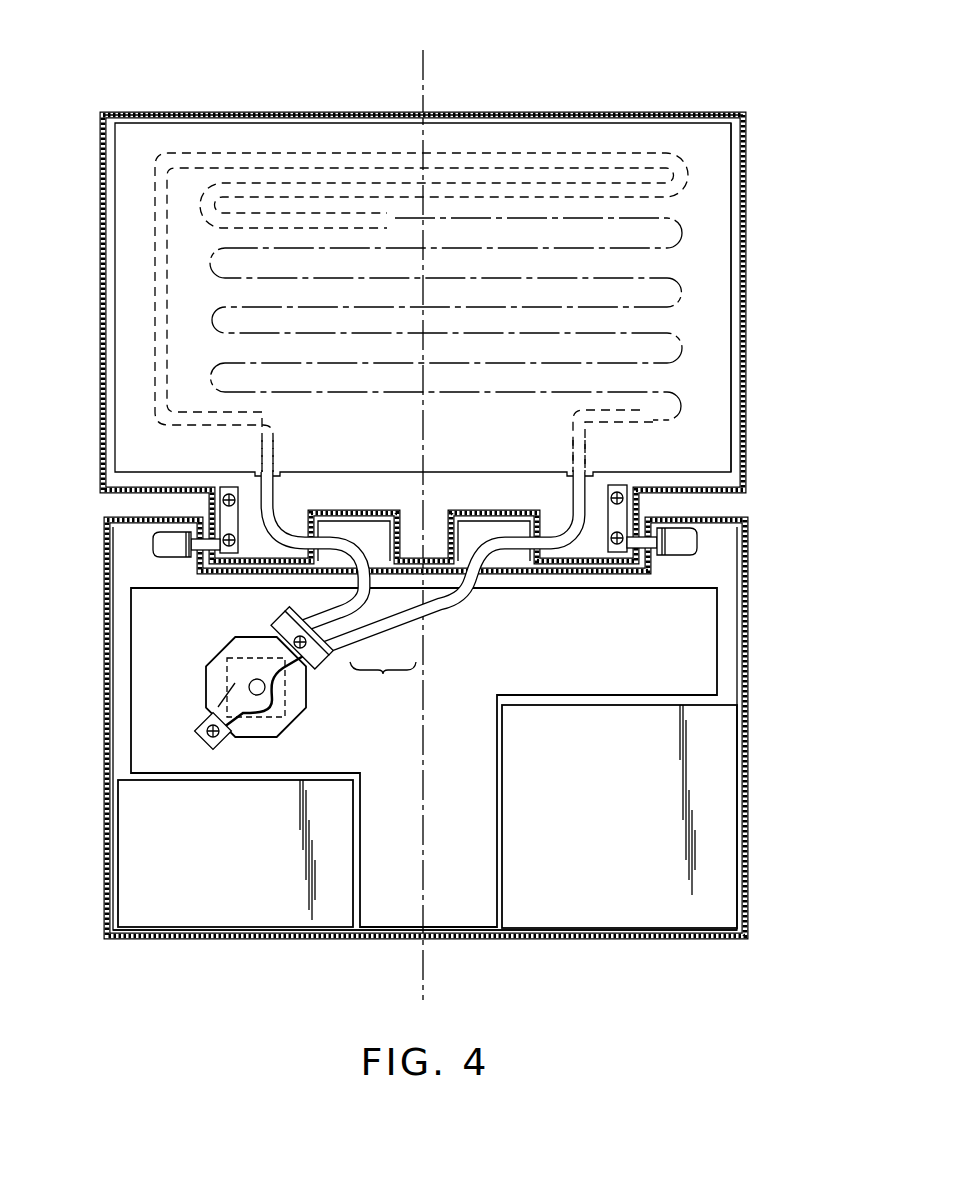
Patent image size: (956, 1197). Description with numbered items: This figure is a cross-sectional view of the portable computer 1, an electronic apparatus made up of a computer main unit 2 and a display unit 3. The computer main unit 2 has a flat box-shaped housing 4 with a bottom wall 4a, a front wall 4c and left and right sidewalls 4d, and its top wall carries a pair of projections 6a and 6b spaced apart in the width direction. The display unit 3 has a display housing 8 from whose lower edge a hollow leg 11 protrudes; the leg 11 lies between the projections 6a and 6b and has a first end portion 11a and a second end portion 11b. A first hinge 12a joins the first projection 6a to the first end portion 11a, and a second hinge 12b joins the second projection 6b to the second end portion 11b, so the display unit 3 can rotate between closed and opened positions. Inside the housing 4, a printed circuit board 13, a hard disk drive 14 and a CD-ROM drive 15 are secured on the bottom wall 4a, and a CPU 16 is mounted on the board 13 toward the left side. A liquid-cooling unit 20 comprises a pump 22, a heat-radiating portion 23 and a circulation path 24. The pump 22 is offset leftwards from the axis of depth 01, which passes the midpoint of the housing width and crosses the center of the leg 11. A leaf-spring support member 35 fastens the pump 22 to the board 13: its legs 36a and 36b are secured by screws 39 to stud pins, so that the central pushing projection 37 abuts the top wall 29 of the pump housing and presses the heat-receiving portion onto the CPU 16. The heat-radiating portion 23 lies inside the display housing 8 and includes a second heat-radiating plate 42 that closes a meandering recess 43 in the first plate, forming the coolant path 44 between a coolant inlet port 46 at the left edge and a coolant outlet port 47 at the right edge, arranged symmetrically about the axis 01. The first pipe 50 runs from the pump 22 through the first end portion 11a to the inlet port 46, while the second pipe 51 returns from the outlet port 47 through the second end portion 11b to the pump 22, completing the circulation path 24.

The portable computer 1 is at (607, 75).
The computer main unit 2 is at (128, 942).
The display unit 3 is at (702, 108).
The housing 4 is at (697, 935).
The bottom wall 4a is at (115, 752).
The front wall 4c is at (280, 945).
The left and right sidewalls 4d is at (103, 668).
The first projection 6a is at (153, 535).
The second projection 6b is at (705, 490).
The display housing 8 is at (183, 110).
The leg 11 is at (437, 515).
The first end portion 11a is at (238, 575).
The second end portion 11b is at (598, 562).
The first hinge 12a is at (183, 548).
The second hinge 12b is at (660, 548).
The printed circuit board 13 is at (490, 838).
The hard disk drive 14 is at (342, 865).
The CD-ROM drive 15 is at (590, 905).
The CPU 16 is at (297, 715).
The cooling unit 20 is at (200, 705).
The pump 22 is at (258, 737).
The heat-radiating portion 23 is at (362, 135).
The circulation path 24 is at (383, 679).
The top wall 29 is at (285, 735).
The support member 35 is at (233, 683).
The first leg 36a is at (315, 665).
The second leg 36b is at (222, 744).
The pushing projection 37 is at (250, 680).
The screws 39 is at (297, 632).
The second heat-radiating plate 42 is at (710, 310).
The recess 43 is at (513, 150).
The coolant path 44 is at (283, 152).
The coolant inlet port 46 is at (273, 470).
The coolant outlet port 47 is at (583, 470).
The first pipe 50 is at (368, 602).
The second pipe 51 is at (407, 614).
The axis of depth 01 is at (428, 742).